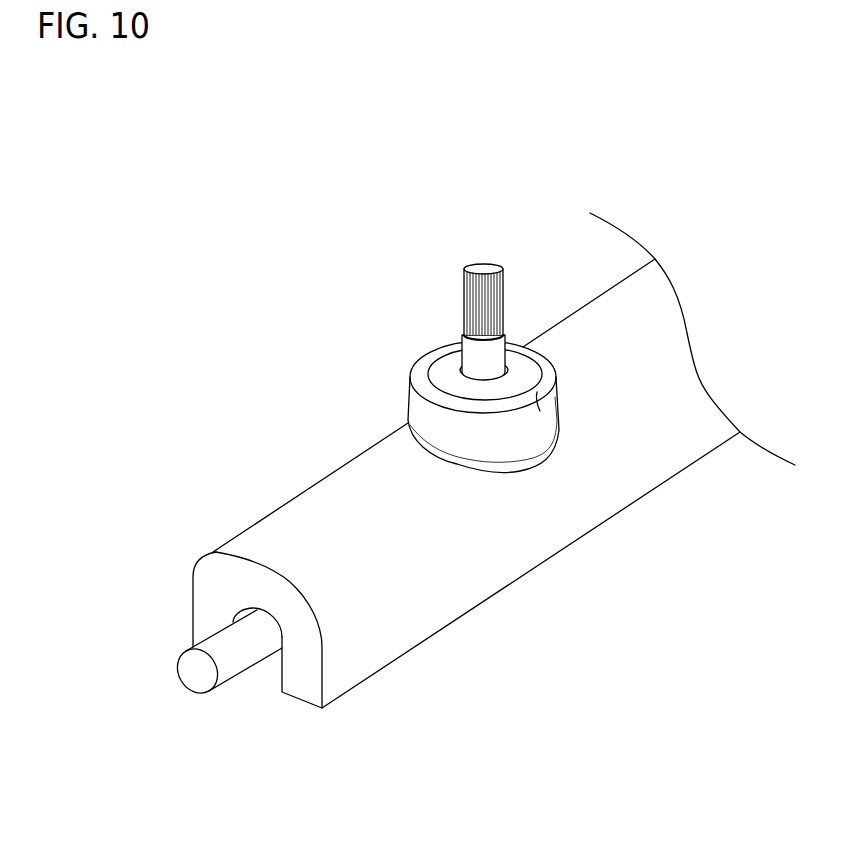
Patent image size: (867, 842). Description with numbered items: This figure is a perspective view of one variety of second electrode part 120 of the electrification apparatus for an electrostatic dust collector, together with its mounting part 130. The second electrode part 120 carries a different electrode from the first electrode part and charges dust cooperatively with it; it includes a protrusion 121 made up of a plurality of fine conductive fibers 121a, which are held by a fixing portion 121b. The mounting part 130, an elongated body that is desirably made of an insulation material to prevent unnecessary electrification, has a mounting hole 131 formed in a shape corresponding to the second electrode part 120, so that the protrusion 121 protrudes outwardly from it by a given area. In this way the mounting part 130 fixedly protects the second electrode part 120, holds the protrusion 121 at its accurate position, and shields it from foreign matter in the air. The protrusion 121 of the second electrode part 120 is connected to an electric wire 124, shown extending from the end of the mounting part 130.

The second electrode part 120 is at (258, 292).
The protrusion 121 is at (323, 272).
The fine conductive fibers 121a is at (464, 289).
The fixing portion 121b is at (475, 356).
The electric wire 124 is at (232, 651).
The mounting part 130 is at (437, 600).
The mounting hole 131 is at (488, 380).